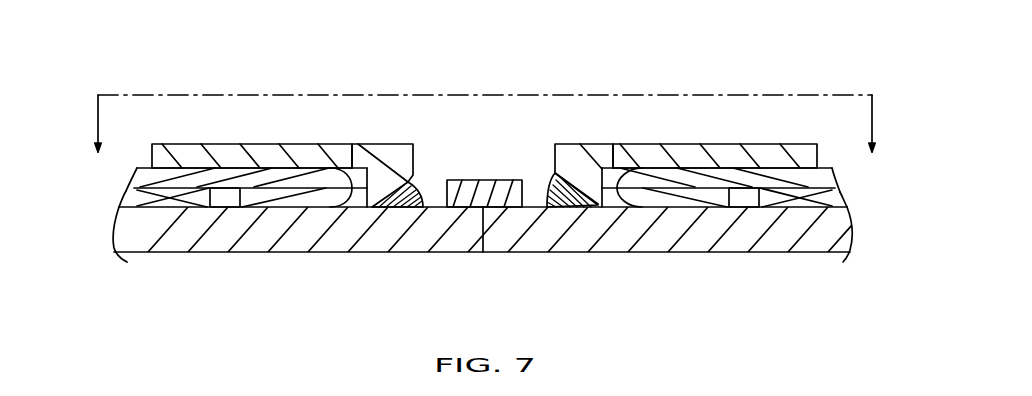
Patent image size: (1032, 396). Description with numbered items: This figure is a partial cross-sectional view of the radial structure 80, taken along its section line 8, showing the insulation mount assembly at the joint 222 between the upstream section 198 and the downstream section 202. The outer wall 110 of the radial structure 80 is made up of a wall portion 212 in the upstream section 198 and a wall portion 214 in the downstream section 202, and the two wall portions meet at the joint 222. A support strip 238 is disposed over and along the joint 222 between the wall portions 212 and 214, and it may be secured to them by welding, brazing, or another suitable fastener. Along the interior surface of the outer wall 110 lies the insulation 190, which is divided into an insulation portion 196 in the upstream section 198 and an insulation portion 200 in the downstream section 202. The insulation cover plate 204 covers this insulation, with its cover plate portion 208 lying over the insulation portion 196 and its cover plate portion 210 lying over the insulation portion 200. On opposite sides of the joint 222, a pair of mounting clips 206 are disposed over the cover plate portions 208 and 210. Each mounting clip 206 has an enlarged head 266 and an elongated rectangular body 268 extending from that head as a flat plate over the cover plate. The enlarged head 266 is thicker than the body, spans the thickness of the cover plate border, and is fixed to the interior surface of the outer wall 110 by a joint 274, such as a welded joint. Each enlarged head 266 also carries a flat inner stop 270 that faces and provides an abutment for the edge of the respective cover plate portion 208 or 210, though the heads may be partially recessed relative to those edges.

The radial structure 80 is at (773, 52).
The section line 8- 8 is at (483, 126).
The outer wall 110 is at (133, 258).
The insulation 190 is at (91, 254).
The insulation portion 196 is at (133, 196).
The upstream section 198 is at (283, 255).
The insulation portion 200 is at (838, 191).
The downstream section 202 is at (694, 258).
The insulation cover plate 204 is at (93, 180).
The mounting clip 206 is at (282, 123).
The cover plate portion 208 is at (137, 168).
The cover plate portion 210 is at (832, 168).
The wall portion 212 is at (117, 240).
The wall portion 214 is at (852, 238).
The joint 222 is at (483, 252).
The support strip 238 is at (480, 180).
The enlarged head 266 is at (396, 134).
The elongated rectangular body 268 is at (257, 134).
The flat inner stop 270 is at (360, 180).
The joint 274 is at (423, 200).